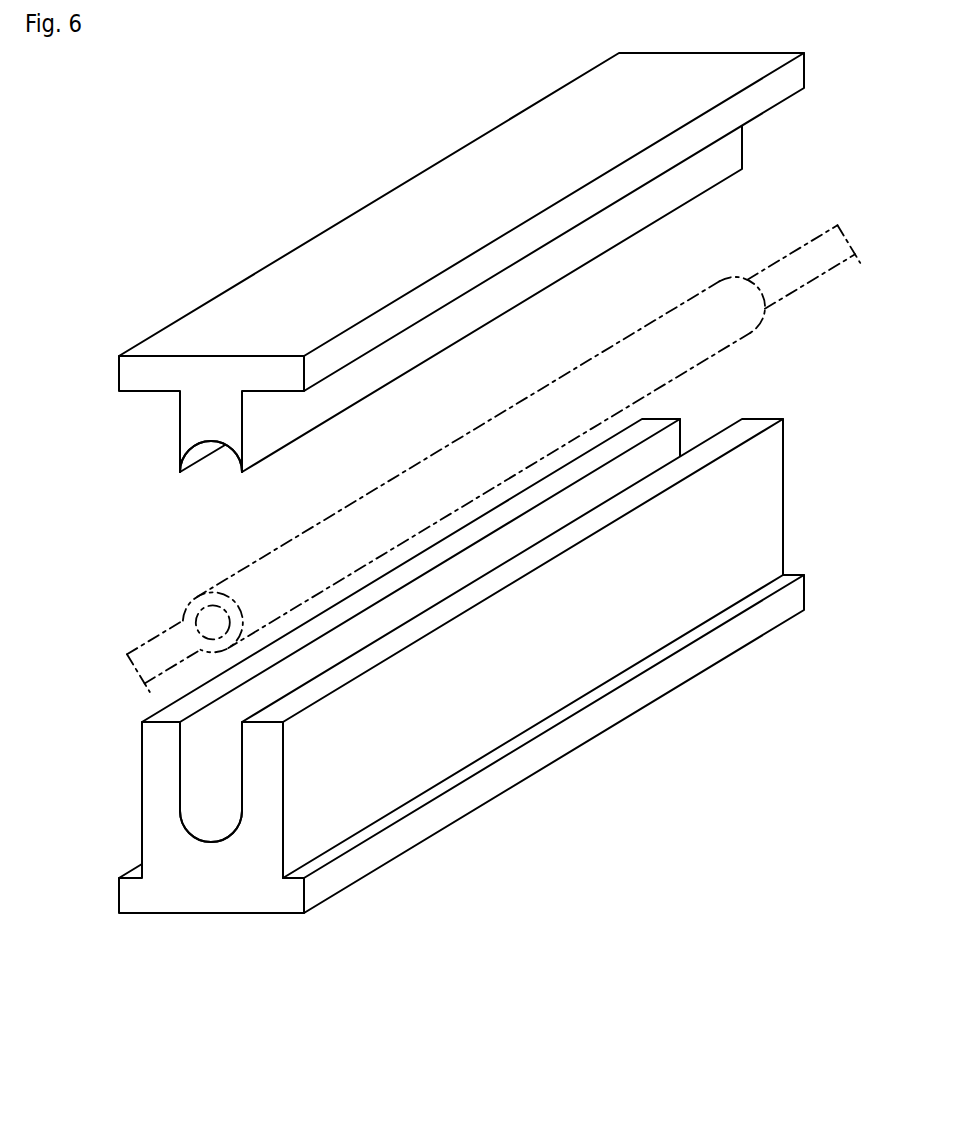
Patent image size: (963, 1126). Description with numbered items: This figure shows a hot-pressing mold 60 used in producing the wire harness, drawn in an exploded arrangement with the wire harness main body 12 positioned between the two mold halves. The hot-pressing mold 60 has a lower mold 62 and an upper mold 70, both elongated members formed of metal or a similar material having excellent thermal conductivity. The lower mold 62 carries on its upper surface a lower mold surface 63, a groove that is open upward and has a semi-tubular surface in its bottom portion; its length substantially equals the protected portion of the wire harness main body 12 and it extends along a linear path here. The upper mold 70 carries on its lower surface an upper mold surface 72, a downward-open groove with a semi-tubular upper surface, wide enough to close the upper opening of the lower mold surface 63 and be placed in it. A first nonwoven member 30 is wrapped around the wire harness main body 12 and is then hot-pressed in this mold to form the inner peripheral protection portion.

The hot-pressing mold 60 is at (419, 143).
The upper mold 70 is at (357, 230).
The upper mold surface 72 is at (206, 446).
The lower mold 62 is at (498, 796).
The lower mold surface 63 is at (218, 820).
The wire harness main body 12 is at (784, 262).
The first nonwoven member 30 is at (455, 440).